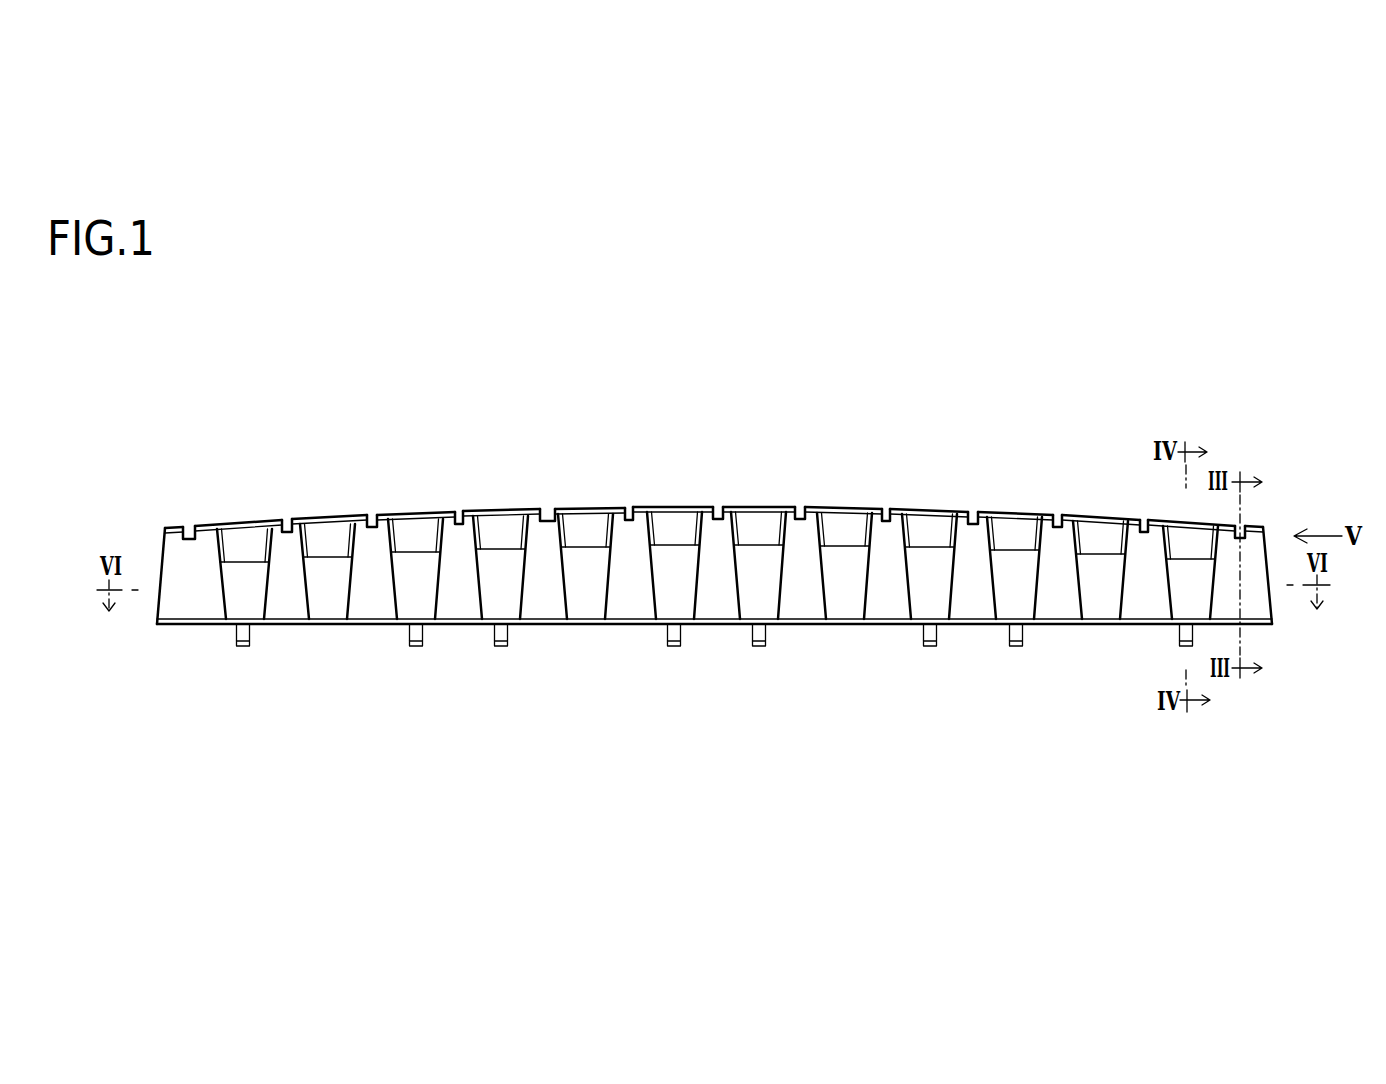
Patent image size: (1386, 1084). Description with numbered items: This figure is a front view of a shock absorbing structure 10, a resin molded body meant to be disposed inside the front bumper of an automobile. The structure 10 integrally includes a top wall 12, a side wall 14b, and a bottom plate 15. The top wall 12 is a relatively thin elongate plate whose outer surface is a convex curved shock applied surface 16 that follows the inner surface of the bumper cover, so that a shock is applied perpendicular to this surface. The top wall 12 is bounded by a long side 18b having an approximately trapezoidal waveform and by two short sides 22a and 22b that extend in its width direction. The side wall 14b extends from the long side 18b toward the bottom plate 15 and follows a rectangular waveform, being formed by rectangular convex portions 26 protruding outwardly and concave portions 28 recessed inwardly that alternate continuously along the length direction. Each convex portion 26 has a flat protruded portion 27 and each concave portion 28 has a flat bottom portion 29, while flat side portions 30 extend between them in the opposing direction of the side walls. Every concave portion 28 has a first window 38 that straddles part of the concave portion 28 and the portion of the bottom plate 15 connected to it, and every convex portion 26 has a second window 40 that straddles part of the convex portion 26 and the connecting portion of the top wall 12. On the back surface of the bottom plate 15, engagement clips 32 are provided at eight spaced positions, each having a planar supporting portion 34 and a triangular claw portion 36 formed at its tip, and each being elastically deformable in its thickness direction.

The shock absorbing structure 10 is at (765, 470).
The top wall 12 is at (418, 508).
The side wall 14b is at (198, 590).
The bottom plate 15 is at (370, 628).
The shock applied surface 16 is at (310, 518).
The long side 18b is at (747, 508).
The short side 22a is at (163, 532).
The short side 22b is at (1267, 526).
The convex portion 26 is at (285, 600).
The protruded portion 27 is at (794, 708).
The concave portion 28 is at (244, 537).
The bottom portion 29 is at (677, 412).
The side portion 30 is at (225, 527).
The engagement clip 32 is at (245, 652).
The supporting portion 34 is at (233, 637).
The claw portion 36 is at (237, 648).
The first window 38 is at (237, 590).
The second window 40 is at (188, 527).